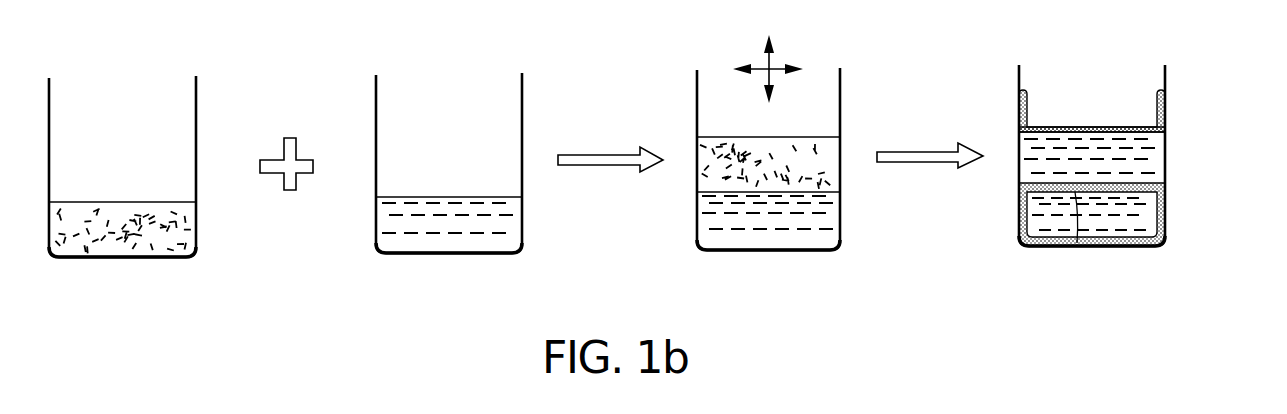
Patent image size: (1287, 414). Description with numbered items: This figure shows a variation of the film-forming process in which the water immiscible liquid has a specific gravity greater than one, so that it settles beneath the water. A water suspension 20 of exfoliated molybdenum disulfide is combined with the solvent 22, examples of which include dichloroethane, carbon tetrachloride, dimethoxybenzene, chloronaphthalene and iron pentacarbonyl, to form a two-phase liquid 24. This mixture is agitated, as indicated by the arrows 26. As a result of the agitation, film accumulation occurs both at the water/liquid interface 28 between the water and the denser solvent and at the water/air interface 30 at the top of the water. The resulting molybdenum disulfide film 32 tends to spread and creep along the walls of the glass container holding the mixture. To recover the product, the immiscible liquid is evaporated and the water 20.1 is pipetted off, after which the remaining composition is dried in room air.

The water suspension 20 is at (140, 247).
The solvent 22 is at (463, 232).
The two-phase liquid 24 is at (687, 208).
The arrows 26 is at (779, 65).
The water/liquid interface 28 is at (1077, 243).
The water/air interface 30 is at (1107, 127).
The film 32 is at (1060, 127).
The water 20.1 is at (1148, 155).